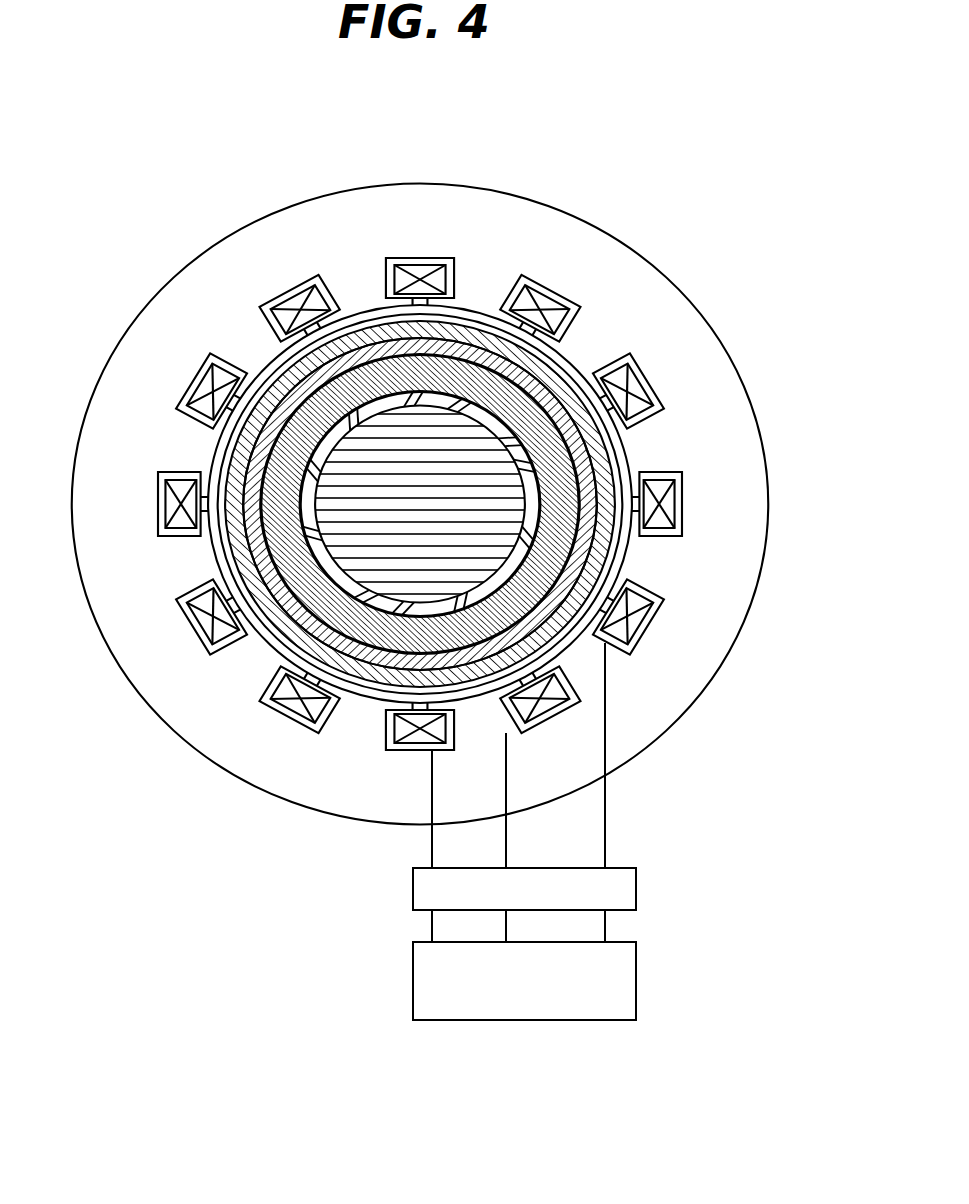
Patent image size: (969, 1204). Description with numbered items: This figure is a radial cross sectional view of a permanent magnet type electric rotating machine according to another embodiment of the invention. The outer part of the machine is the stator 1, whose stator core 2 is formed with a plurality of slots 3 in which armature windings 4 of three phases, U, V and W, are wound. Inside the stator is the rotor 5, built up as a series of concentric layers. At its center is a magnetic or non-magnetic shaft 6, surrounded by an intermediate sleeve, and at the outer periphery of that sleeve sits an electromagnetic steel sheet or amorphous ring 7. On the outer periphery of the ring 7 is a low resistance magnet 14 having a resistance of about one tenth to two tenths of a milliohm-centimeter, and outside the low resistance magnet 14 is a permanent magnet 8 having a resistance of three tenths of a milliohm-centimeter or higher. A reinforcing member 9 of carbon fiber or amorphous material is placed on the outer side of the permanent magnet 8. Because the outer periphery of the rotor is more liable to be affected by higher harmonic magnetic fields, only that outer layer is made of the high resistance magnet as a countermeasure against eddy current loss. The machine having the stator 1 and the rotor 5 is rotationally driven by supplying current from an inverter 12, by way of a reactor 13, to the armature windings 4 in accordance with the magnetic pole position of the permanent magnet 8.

The stator 1 is at (648, 263).
The stator core 2 is at (690, 356).
The slots 3 is at (540, 288).
The armature windings 4 is at (415, 270).
The rotor 5 is at (387, 429).
The shaft 6 is at (355, 488).
The electromagnetic steel sheet or amorphous ring 7 is at (312, 538).
The permanent magnet 8 is at (290, 620).
The reinforcing member 9 is at (300, 645).
The inverter 12 is at (630, 984).
The reactor 13 is at (630, 891).
The low resistance magnet 14 is at (391, 362).